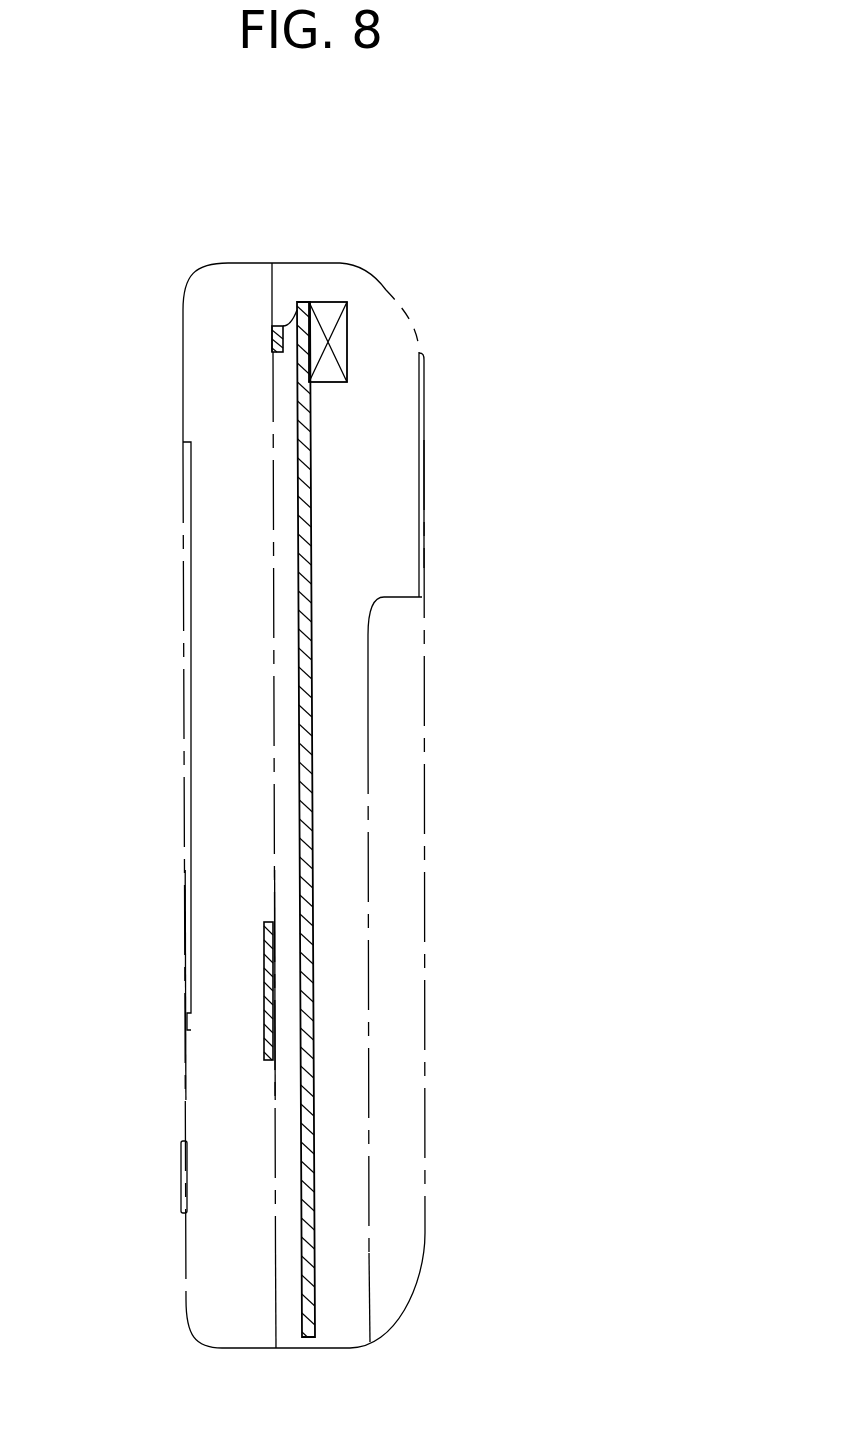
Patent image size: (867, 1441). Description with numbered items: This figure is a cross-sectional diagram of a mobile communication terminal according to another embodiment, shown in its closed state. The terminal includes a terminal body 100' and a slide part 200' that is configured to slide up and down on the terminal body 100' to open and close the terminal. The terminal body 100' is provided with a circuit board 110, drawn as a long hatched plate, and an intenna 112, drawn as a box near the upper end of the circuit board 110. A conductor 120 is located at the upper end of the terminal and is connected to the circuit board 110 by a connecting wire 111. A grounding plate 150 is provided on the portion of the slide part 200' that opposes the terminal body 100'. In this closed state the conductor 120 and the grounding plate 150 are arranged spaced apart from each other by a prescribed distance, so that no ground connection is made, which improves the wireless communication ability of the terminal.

The terminal body 100' is at (446, 805).
The slide part 200' is at (202, 805).
The circuit board 110 is at (310, 518).
The connecting wire 111 is at (274, 326).
The intenna 112 is at (330, 310).
The conductor 120 is at (273, 337).
The grounding plate 150 is at (265, 983).